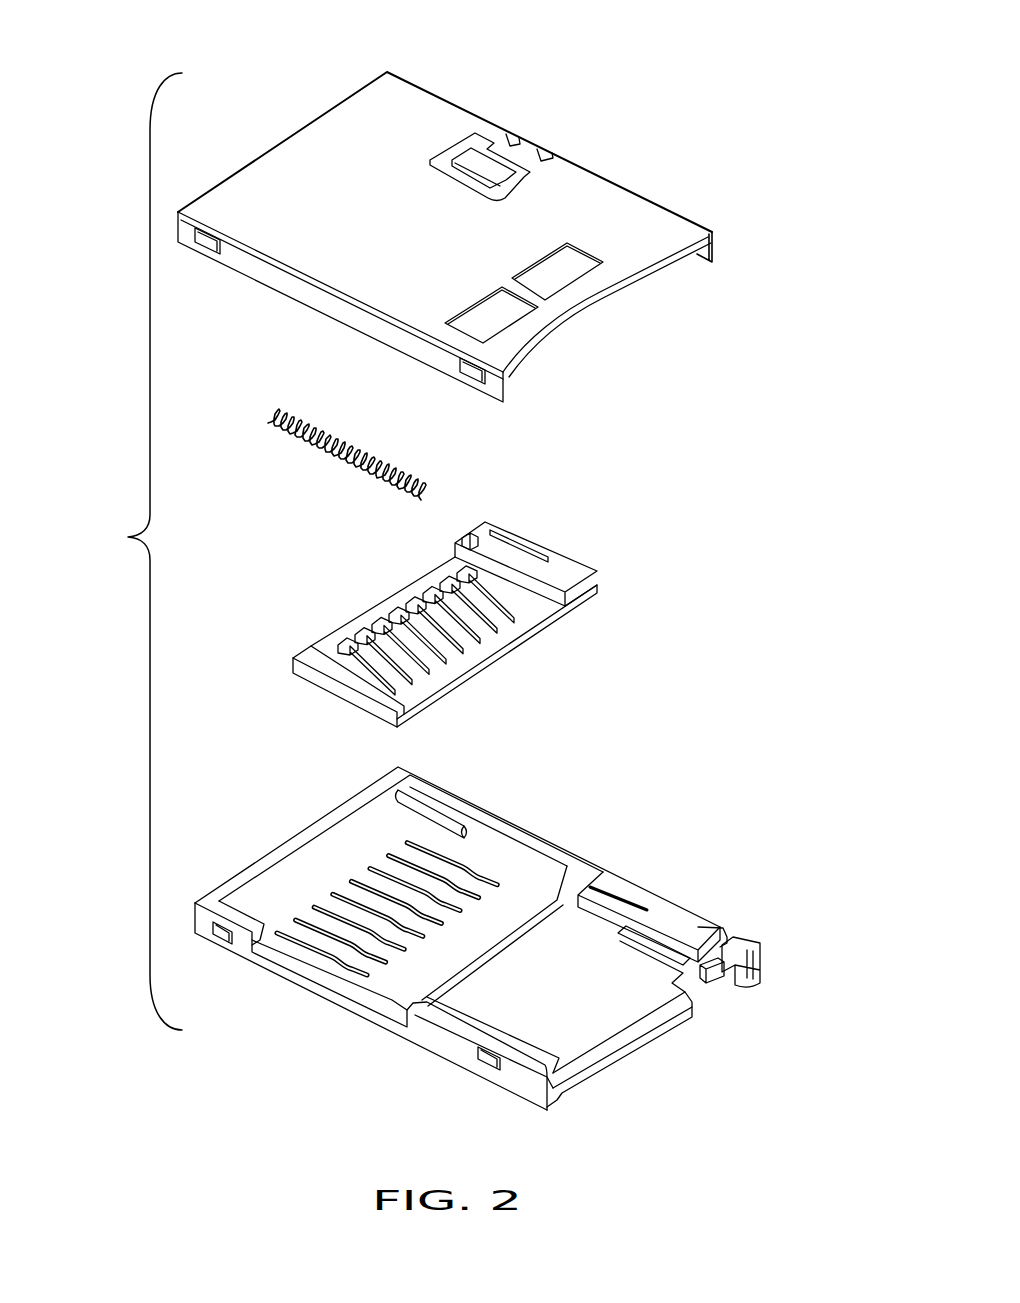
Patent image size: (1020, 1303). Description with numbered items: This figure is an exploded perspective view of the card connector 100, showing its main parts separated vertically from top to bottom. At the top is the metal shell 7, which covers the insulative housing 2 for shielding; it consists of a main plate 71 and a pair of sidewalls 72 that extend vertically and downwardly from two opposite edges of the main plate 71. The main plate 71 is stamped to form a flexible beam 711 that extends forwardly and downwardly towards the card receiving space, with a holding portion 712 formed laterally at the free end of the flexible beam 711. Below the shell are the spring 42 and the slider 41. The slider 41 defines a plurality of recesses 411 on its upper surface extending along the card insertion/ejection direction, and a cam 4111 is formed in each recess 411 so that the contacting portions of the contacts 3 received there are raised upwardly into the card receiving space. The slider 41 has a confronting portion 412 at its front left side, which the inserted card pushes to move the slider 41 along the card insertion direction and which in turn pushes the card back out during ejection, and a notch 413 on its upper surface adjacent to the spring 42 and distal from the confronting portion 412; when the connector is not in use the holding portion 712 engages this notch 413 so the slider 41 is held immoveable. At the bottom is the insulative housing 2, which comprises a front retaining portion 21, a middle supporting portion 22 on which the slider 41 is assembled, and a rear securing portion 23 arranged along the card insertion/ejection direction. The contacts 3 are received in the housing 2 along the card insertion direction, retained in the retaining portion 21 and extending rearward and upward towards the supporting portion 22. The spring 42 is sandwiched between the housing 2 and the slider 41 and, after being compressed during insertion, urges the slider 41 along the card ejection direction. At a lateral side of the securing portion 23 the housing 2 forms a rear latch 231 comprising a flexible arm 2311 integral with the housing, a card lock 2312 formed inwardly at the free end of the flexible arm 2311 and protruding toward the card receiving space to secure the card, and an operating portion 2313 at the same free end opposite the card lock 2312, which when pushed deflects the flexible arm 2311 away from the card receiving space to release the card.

The card connector 100 is at (128, 537).
The metal shell 7 is at (474, 220).
The main plate 71 is at (417, 131).
The flexible beam 711 is at (535, 178).
The holding portion 712 is at (467, 152).
The sidewalls 72 is at (704, 251).
The spring 42 is at (320, 457).
The slider 41 is at (421, 592).
The recesses 411 is at (476, 611).
The cam 4111 is at (503, 610).
The confronting portion 412 is at (343, 668).
The notch 413 is at (464, 545).
The insulative housing 2 is at (494, 959).
The front retaining portion 21 is at (270, 898).
The middle supporting portion 22 is at (367, 995).
The rear securing portion 23 is at (580, 1040).
The rear latch 231 is at (700, 882).
The flexible arm 2311 is at (655, 928).
The card lock 2312 is at (699, 966).
The operating portion 2313 is at (768, 921).
The contacts 3 is at (353, 960).